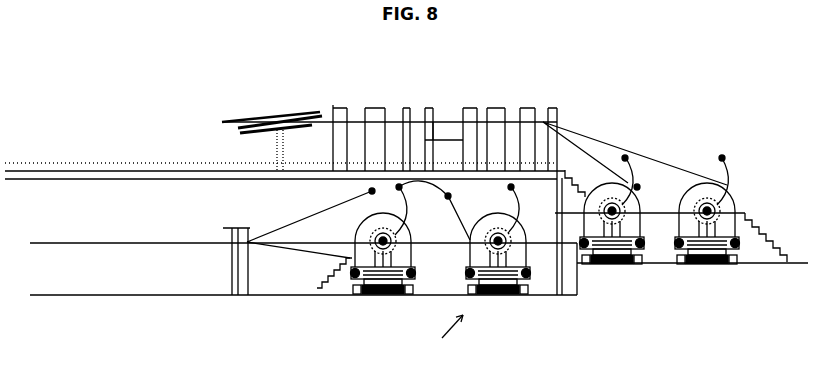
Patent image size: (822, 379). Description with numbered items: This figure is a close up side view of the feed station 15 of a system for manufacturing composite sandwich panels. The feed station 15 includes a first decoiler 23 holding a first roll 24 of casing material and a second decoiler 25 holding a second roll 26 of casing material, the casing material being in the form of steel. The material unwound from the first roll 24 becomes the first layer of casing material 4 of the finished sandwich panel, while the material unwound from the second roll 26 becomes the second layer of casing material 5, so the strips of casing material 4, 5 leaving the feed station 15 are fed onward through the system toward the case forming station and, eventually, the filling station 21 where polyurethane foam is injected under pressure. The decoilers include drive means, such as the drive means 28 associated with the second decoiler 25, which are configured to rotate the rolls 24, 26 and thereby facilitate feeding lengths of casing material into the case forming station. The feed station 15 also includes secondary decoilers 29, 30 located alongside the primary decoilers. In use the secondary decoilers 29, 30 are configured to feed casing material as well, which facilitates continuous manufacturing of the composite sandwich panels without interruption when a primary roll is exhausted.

The first layer of casing material 4 is at (183, 247).
The second layer of casing material 5 is at (445, 122).
The feed station 15 is at (444, 333).
The filling station 21 is at (378, 250).
The first decoiler 23 is at (384, 292).
The first roll 24 is at (410, 258).
The second decoiler 25 is at (632, 264).
The second roll 26 is at (638, 222).
The drive means 28 is at (615, 198).
The secondary decoiler 29 is at (521, 291).
The secondary decoiler 30 is at (730, 264).